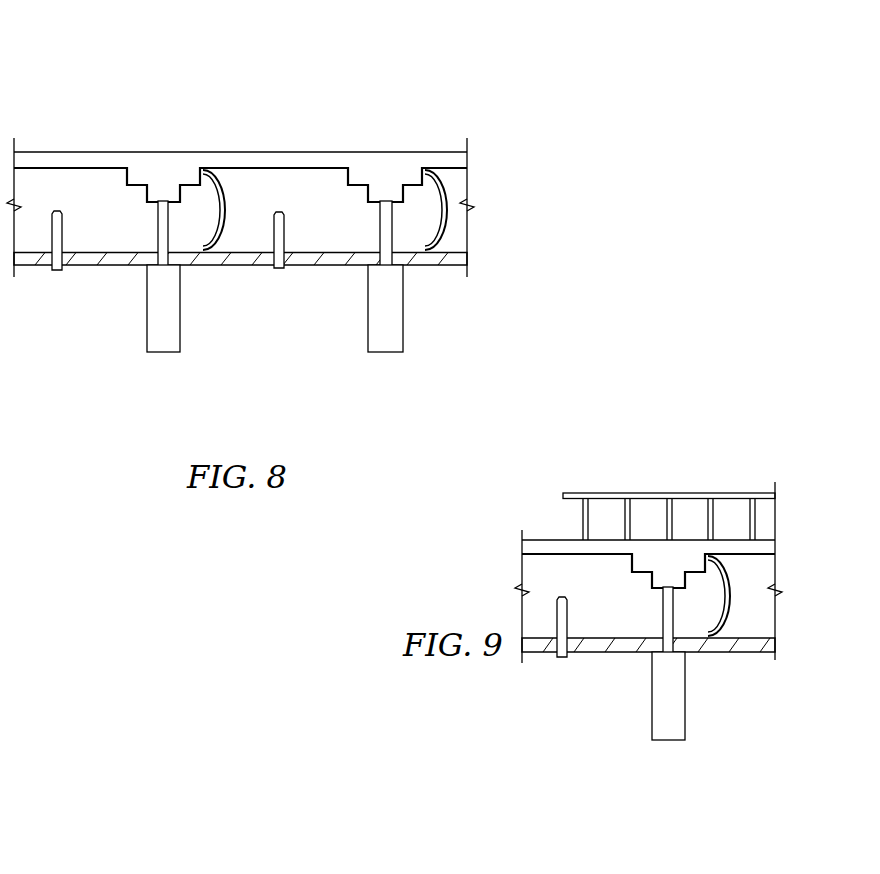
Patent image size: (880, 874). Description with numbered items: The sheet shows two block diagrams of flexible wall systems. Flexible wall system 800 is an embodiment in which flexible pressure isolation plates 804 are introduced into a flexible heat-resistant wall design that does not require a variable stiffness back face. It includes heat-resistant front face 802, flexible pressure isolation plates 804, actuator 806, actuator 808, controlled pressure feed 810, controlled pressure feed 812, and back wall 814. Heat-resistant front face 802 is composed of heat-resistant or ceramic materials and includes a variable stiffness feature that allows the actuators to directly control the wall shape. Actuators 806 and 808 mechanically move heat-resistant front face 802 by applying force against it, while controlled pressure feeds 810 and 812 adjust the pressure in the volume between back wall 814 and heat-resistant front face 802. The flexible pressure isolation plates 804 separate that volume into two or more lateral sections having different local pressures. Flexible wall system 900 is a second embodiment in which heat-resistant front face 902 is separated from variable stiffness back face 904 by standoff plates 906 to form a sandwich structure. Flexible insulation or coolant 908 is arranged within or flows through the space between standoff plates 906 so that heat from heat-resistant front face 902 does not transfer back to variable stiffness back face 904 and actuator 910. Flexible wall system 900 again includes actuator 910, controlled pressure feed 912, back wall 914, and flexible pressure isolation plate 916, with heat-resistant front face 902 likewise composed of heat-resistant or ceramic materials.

In FIG. 8, the flexible wall system 800 is at (413, 94).
In FIG. 8, the heat-resistant front face 802 is at (113, 151).
In FIG. 8, the flexible pressure isolation plates 804 is at (224, 198).
In FIG. 8, the actuator 806 is at (158, 368).
In FIG. 8, the actuator 808 is at (380, 368).
In FIG. 8, the controlled pressure feed 810 is at (283, 230).
In FIG. 8, the controlled pressure feed 812 is at (62, 230).
In FIG. 8, the back wall 814 is at (230, 266).
In FIG. 9, the flexible wall system 900 is at (753, 274).
In FIG. 9, the heat-resistant front face 902 is at (677, 558).
In FIG. 9, the variable stiffness back face 904 is at (693, 493).
In FIG. 9, the standoff plates 906 is at (566, 520).
In FIG. 9, the flexible insulation or coolant 908 is at (608, 517).
In FIG. 9, the actuator 910 is at (663, 755).
In FIG. 9, the controlled pressure feed 912 is at (557, 622).
In FIG. 9, the back wall 914 is at (615, 653).
In FIG. 9, the flexible pressure isolation plate 916 is at (731, 613).